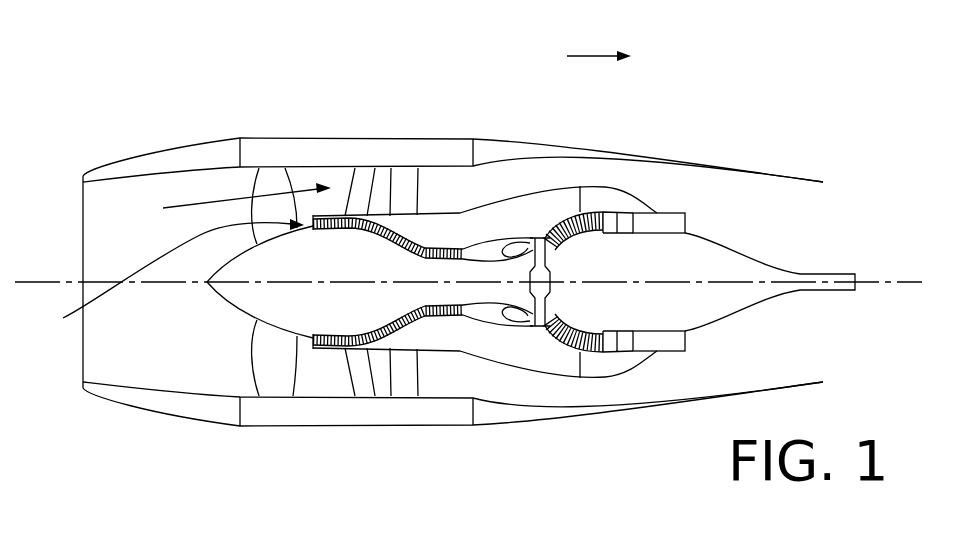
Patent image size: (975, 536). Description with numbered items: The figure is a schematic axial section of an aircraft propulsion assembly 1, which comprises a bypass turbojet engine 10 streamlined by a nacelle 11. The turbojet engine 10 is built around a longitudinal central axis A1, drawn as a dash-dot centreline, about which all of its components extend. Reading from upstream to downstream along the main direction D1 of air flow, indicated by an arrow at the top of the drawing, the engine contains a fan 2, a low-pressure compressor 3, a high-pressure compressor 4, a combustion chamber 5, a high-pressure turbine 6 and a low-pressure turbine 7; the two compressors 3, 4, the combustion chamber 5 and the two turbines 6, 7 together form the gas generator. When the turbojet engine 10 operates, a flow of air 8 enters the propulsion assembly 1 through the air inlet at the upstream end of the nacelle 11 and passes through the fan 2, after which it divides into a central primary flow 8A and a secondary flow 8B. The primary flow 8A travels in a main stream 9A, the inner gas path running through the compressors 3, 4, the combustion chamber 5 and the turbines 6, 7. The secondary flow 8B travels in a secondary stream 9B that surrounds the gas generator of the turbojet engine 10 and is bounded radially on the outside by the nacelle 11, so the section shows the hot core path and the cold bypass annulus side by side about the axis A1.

The propulsion assembly 1 is at (243, 95).
The fan 2 is at (267, 348).
The low-pressure compressor 3 is at (345, 217).
The high-pressure compressor 4 is at (452, 240).
The combustion chamber 5 is at (512, 234).
The high-pressure turbine 6 is at (561, 209).
The low-pressure turbine 7 is at (606, 202).
The flow of air 8 is at (187, 202).
The primary flow 8A is at (162, 278).
The secondary flow 8B is at (262, 196).
The main stream 9A is at (403, 317).
The secondary stream 9B is at (523, 392).
The bypass turbojet engine 10 is at (715, 213).
The nacelle 11 is at (365, 148).
The longitudinal central axis A1 is at (27, 282).
The main direction of flow of air D1 is at (598, 55).